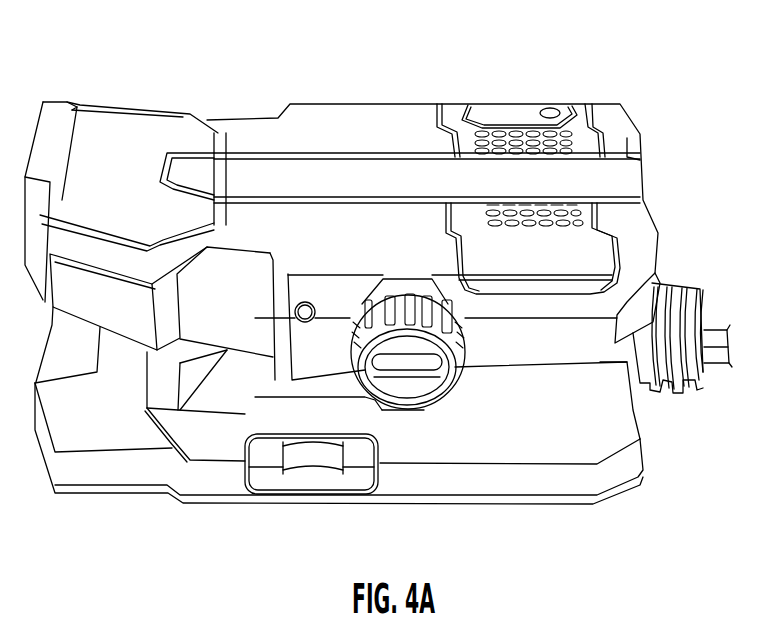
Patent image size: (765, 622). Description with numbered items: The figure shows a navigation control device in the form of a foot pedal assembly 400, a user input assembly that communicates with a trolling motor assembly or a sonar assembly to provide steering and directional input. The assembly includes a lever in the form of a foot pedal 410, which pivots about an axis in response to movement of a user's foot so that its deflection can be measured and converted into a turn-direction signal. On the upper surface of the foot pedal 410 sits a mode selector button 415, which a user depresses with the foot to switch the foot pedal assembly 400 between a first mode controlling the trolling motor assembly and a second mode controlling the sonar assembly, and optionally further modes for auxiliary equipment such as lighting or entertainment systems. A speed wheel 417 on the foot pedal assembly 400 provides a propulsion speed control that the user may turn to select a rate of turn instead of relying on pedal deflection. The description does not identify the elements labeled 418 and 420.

The foot pedal assembly 400 is at (312, 84).
The foot pedal 410 is at (397, 125).
The mode selector button 415 is at (522, 108).
The speed wheel 417 is at (462, 395).
The cable connector 418 is at (715, 390).
The base 420 is at (527, 515).